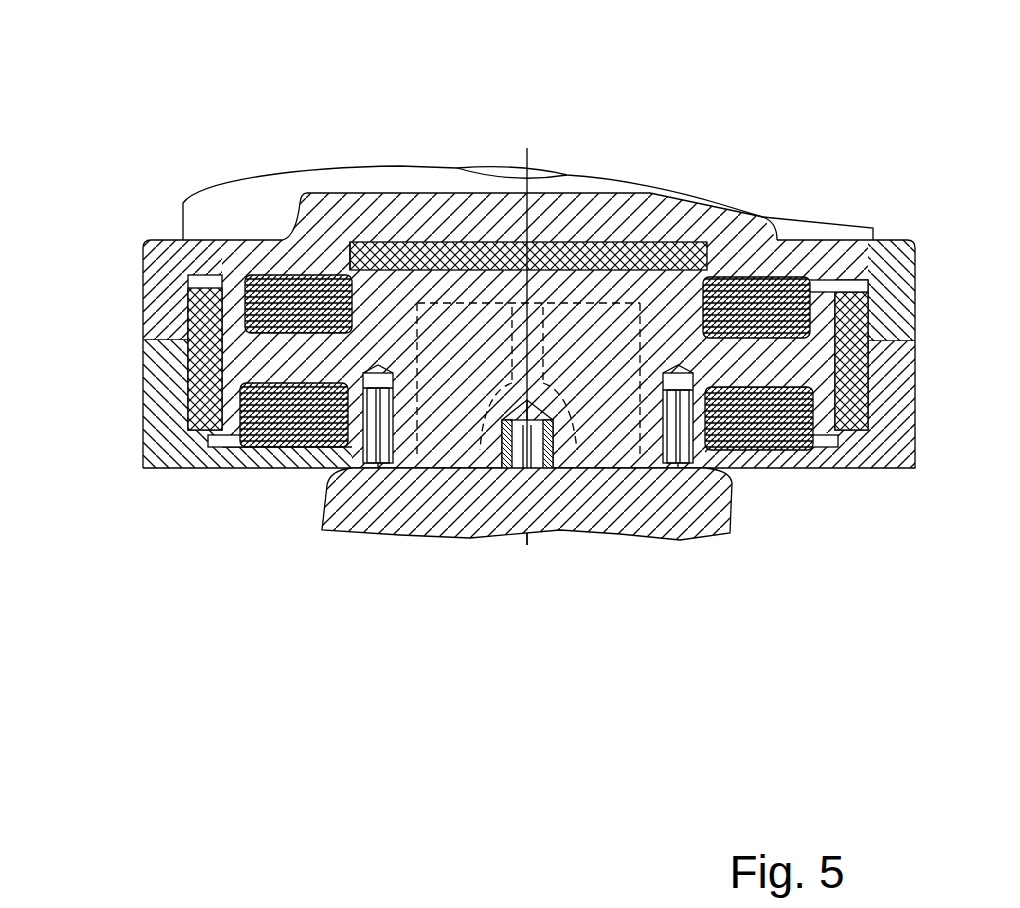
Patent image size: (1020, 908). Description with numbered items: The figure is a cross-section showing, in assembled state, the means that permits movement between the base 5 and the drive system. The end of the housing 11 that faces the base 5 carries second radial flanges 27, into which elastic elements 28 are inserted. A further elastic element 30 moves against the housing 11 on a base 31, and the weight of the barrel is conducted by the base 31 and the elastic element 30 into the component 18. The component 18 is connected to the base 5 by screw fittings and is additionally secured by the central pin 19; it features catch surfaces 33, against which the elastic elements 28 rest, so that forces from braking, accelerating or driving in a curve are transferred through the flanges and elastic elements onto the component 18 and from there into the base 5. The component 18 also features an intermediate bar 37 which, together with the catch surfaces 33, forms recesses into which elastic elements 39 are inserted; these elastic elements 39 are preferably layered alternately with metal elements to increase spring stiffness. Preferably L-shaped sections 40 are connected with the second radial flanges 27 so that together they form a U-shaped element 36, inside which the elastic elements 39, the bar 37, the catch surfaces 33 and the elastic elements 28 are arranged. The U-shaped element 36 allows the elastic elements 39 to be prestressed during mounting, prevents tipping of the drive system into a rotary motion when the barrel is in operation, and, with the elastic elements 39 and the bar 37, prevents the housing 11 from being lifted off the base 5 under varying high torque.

The base 5 is at (623, 513).
The housing 11 is at (267, 203).
The component 18 is at (400, 445).
The central pin 19 is at (550, 490).
The second radial flanges 27 is at (167, 305).
The elastic elements 28 is at (182, 375).
The elastic element 30 is at (488, 242).
The base 31 is at (597, 242).
The catch surfaces 33 is at (228, 273).
The U-shaped element 36 is at (137, 347).
The intermediate bar 37 is at (322, 358).
The elastic elements 39 is at (292, 278).
The sections 40 is at (168, 423).